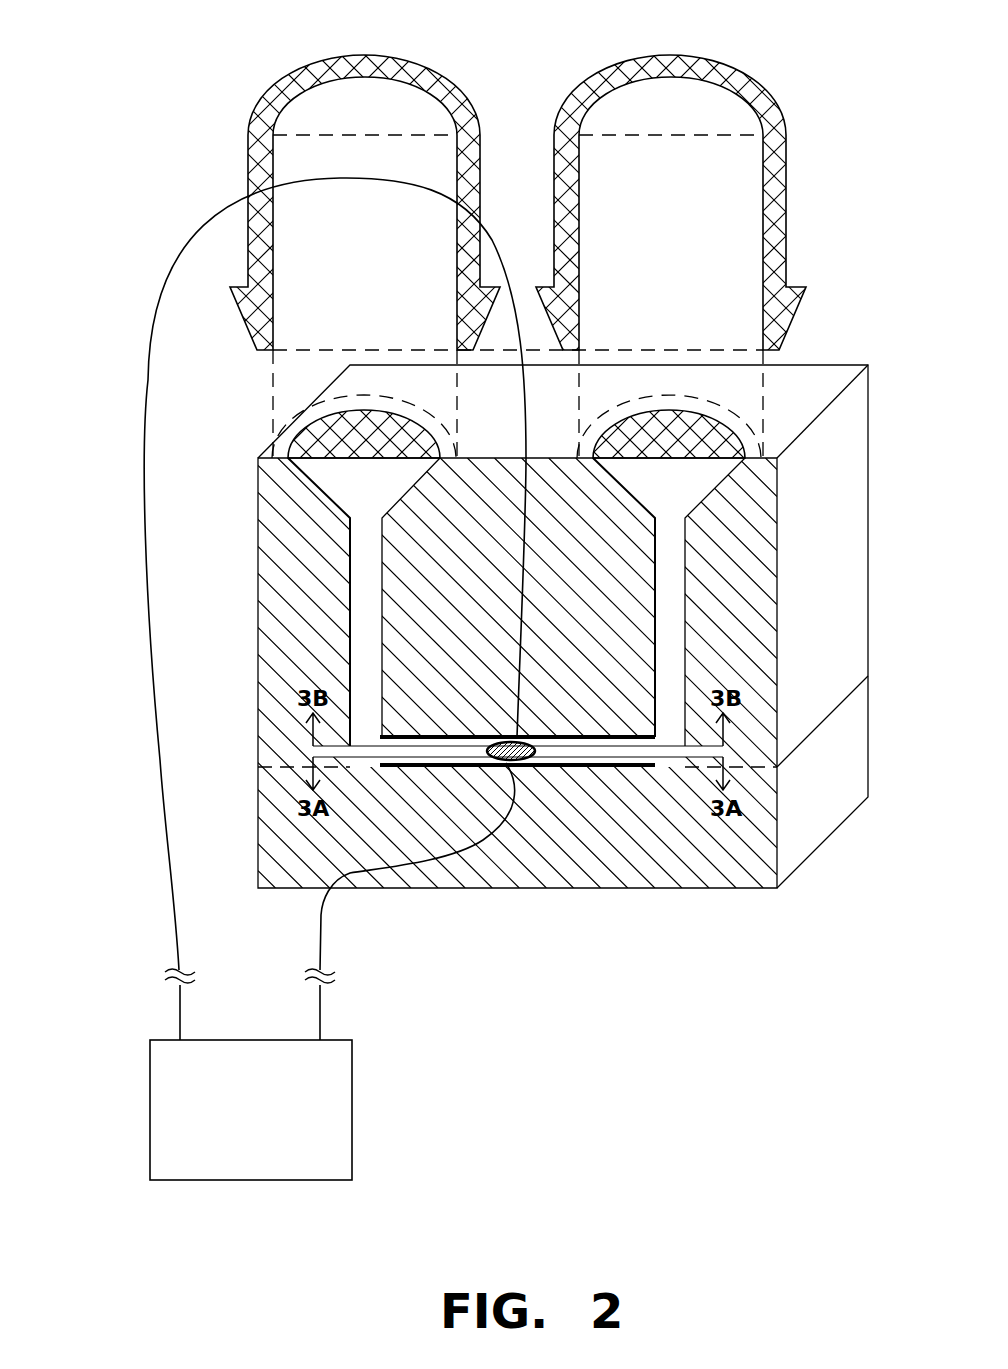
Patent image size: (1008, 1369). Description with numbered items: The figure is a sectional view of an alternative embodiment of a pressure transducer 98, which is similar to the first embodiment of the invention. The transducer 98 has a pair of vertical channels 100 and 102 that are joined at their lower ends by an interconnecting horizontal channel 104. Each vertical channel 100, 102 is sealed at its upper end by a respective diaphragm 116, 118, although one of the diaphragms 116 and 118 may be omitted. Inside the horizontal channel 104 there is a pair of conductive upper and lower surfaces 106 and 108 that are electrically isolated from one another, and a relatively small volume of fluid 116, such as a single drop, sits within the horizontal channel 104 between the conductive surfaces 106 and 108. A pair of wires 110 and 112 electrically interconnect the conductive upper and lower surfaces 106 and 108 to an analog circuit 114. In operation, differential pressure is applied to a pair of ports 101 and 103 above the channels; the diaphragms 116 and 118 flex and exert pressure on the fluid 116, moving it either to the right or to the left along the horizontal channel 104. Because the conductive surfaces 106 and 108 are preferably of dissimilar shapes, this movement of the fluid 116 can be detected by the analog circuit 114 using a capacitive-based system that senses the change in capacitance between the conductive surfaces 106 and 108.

The pressure transducer 98 is at (207, 756).
The vertical channel 100 is at (339, 590).
The port 101 is at (395, 165).
The vertical channel 102 is at (697, 620).
The port 103 is at (700, 165).
The horizontal channel 104 is at (435, 752).
The conductive upper surface 106 is at (600, 752).
The conductive lower surface 108 is at (556, 750).
The wire 110 is at (168, 862).
The wire 112 is at (325, 912).
The analog circuit 114 is at (352, 1065).
The diaphragm 116 is at (345, 433).
The diaphragm 118 is at (700, 433).